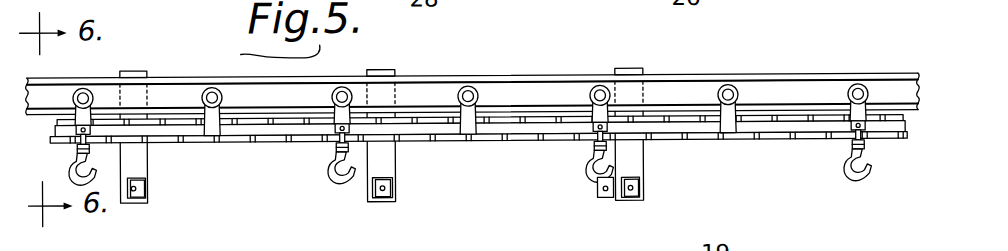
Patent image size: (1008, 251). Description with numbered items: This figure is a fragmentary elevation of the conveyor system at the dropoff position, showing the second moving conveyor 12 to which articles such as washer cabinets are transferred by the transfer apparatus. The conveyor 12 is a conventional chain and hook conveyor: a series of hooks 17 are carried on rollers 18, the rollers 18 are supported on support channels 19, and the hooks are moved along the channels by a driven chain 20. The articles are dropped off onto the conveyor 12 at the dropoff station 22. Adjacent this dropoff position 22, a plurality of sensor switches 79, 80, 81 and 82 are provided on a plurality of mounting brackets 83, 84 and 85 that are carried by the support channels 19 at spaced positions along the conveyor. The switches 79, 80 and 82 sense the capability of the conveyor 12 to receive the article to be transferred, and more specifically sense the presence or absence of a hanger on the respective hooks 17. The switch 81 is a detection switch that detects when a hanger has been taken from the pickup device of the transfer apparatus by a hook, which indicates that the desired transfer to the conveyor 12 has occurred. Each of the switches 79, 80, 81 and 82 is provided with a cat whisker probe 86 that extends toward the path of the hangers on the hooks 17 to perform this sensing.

The second moving conveyor 12 is at (472, 72).
The hooks 17 is at (850, 179).
The rollers 18 is at (861, 89).
The support channels 19 is at (792, 109).
The driven chain 20 is at (827, 139).
The dropoff station 22 is at (484, 141).
The sensor switch 79 is at (161, 159).
The sensor switch 80 is at (406, 154).
The detection switch 81 is at (608, 200).
The sensor switch 82 is at (651, 153).
The mounting bracket 83 is at (133, 158).
The mounting bracket 84 is at (387, 160).
The mounting bracket 85 is at (633, 164).
The cat whisker probes 86 is at (147, 190).